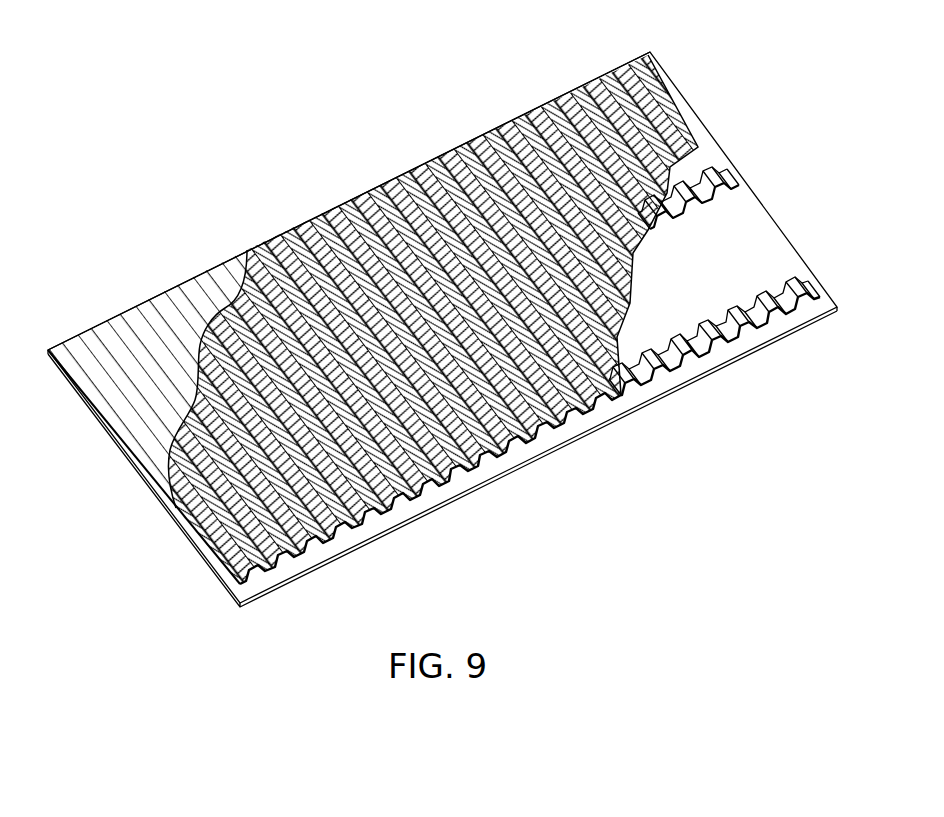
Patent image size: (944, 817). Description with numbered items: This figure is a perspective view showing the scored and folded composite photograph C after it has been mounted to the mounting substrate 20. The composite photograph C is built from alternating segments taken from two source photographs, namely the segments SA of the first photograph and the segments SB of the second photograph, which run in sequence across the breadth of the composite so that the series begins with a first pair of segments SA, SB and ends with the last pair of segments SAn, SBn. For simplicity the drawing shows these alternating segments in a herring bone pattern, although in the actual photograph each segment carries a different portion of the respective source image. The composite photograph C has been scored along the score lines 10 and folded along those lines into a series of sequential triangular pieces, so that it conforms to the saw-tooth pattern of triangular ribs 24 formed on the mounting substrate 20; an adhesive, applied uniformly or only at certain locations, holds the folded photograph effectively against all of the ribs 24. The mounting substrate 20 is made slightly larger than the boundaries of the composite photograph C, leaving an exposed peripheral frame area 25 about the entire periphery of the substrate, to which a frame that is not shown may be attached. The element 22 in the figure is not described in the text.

The score lines 10 is at (322, 232).
The mounting substrate 20 is at (740, 217).
The base sheet 22 is at (756, 250).
The triangular ribs 24 is at (775, 297).
The peripheral frame area 25 is at (247, 256).
The composite photograph C is at (416, 156).
The segments of photograph A SA is at (230, 548).
The segments of photograph B SB is at (263, 570).
The nth segment of photograph A SAn is at (627, 74).
The nth segment of photograph B SBn is at (645, 60).